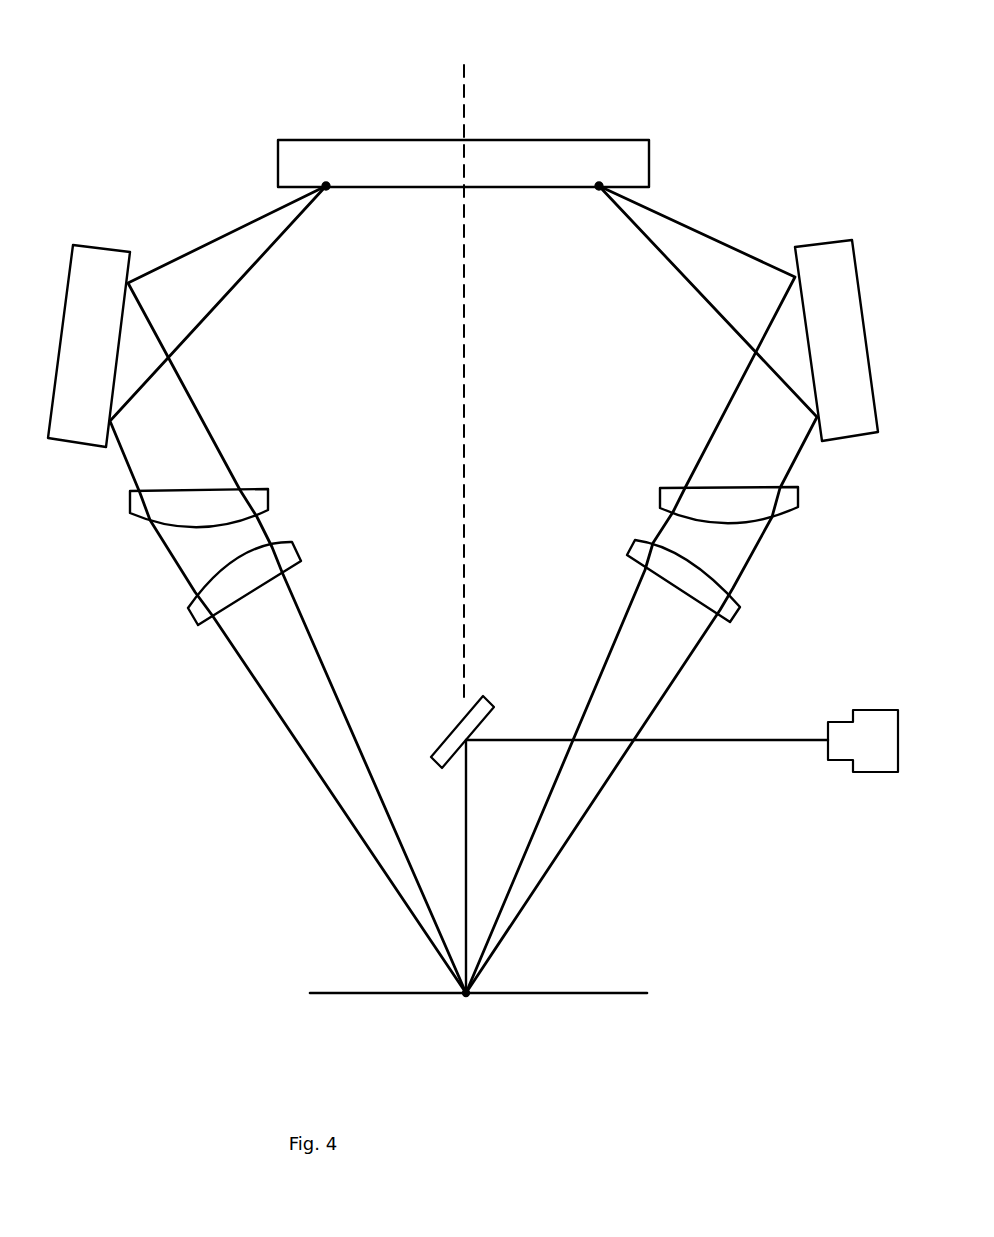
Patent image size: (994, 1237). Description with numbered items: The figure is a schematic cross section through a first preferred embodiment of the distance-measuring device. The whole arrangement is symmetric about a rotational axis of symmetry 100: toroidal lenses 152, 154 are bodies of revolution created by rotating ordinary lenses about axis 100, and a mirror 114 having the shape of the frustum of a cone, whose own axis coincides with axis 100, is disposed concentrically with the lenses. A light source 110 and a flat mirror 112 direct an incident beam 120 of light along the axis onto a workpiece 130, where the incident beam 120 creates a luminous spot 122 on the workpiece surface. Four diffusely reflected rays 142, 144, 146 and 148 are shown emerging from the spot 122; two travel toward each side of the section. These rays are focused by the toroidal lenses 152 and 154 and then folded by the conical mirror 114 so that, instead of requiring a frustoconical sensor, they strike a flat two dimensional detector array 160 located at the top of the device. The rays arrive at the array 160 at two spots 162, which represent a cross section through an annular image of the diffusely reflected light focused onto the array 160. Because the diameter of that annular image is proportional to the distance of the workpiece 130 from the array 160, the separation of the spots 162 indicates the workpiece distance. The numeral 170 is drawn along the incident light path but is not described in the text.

The rotational axis of symmetry 100 is at (463, 95).
The flat two dimensional detector array 160 is at (650, 160).
The spots 162 is at (598, 195).
The diffusely reflected ray 146 is at (198, 248).
The diffusely reflected ray 148 is at (232, 292).
The diffusely reflected ray 142 is at (727, 240).
The diffusely reflected ray 144 is at (698, 283).
The mirror 114 is at (463, 343).
The toroidal lens 152 is at (138, 502).
The toroidal lens 154 is at (200, 602).
The flat mirror 112 is at (485, 705).
The incident beam 120 is at (767, 740).
The light source 110 is at (863, 741).
The vertical optical path 170 is at (467, 898).
The workpiece 130 is at (607, 995).
The luminous spot 122 is at (472, 997).